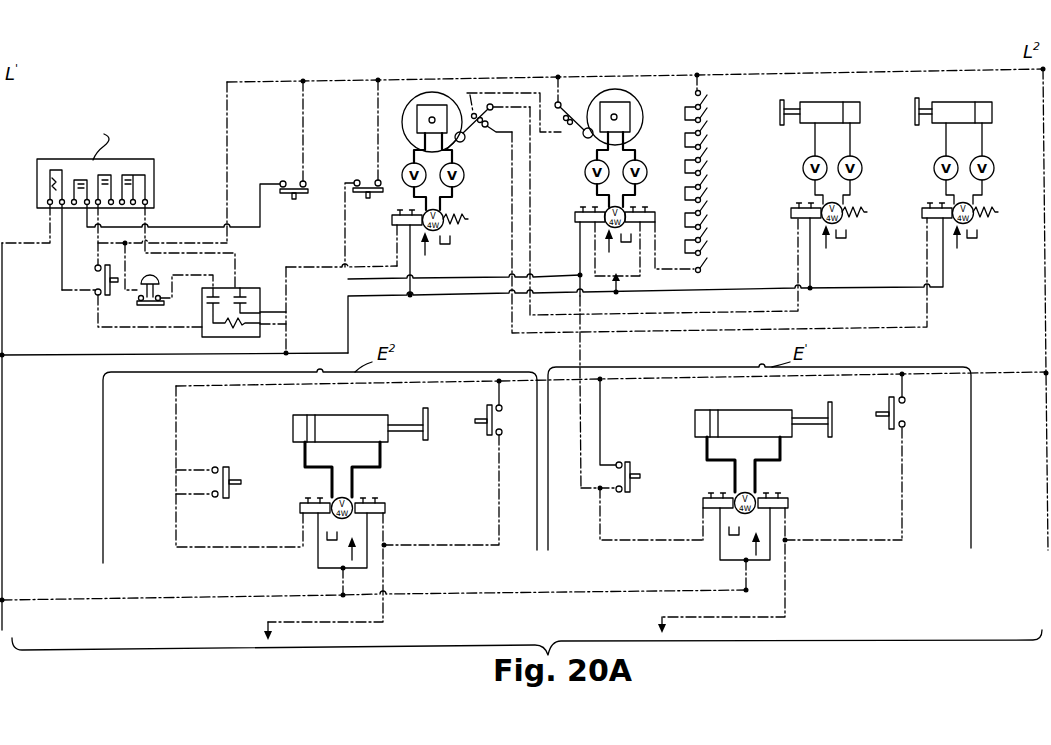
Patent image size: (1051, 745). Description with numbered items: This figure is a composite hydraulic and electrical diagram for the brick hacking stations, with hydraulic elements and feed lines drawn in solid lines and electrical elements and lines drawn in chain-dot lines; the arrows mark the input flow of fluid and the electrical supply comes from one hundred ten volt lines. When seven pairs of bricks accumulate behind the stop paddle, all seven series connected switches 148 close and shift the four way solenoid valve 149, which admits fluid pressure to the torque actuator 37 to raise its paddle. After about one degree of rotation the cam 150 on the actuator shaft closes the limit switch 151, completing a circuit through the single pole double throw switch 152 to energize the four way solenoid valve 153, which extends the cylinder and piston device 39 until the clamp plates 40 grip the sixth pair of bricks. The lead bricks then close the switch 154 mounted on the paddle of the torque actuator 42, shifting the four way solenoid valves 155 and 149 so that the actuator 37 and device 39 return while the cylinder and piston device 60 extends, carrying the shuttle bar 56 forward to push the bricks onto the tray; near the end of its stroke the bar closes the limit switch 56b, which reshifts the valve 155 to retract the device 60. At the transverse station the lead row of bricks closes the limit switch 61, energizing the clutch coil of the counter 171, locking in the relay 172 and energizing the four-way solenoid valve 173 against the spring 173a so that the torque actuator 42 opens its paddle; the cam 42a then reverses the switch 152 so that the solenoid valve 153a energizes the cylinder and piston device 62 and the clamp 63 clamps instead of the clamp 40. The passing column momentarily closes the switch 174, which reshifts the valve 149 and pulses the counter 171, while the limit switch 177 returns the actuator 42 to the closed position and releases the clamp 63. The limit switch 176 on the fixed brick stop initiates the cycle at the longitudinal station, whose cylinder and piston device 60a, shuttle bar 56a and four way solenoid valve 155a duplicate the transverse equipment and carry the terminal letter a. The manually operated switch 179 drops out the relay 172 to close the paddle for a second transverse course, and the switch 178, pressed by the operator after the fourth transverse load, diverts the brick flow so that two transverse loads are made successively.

The counter 171 is at (131, 160).
The switch 178 is at (153, 202).
The switch 174 is at (270, 192).
The limit switch 177 is at (355, 192).
The torque actuator 42 is at (420, 112).
The cam 42a is at (435, 92).
The single pole double throw switch 152 is at (479, 140).
The torque actuator 37 is at (602, 106).
The cam 150 is at (625, 100).
The limit switch 151 is at (572, 131).
The four way solenoid valve 149 is at (604, 212).
The four-way solenoid valve 173 is at (423, 217).
The spring 173a is at (462, 226).
The series connected switches 148 is at (712, 280).
The clamp plates 40 is at (778, 110).
The cylinder and piston device 39 is at (832, 108).
The clamp 63 is at (913, 110).
The cylinder and piston device 62 is at (970, 108).
The four way solenoid valve 153 is at (820, 206).
The solenoid valve 153a is at (951, 206).
The relay 172 is at (249, 288).
The limit switch 61 is at (96, 292).
The switch 179 is at (165, 297).
The limit switch 176 is at (222, 466).
The cylinder and piston device 60a is at (340, 420).
The shuttle bar 56a is at (428, 441).
The limit switch 56b is at (490, 406).
The four way solenoid valve 155a is at (332, 500).
The switch 154 is at (622, 462).
The cylinder and piston device 60 is at (753, 415).
The shuttle bar 56 is at (832, 433).
The four way solenoid valve 155 is at (735, 498).